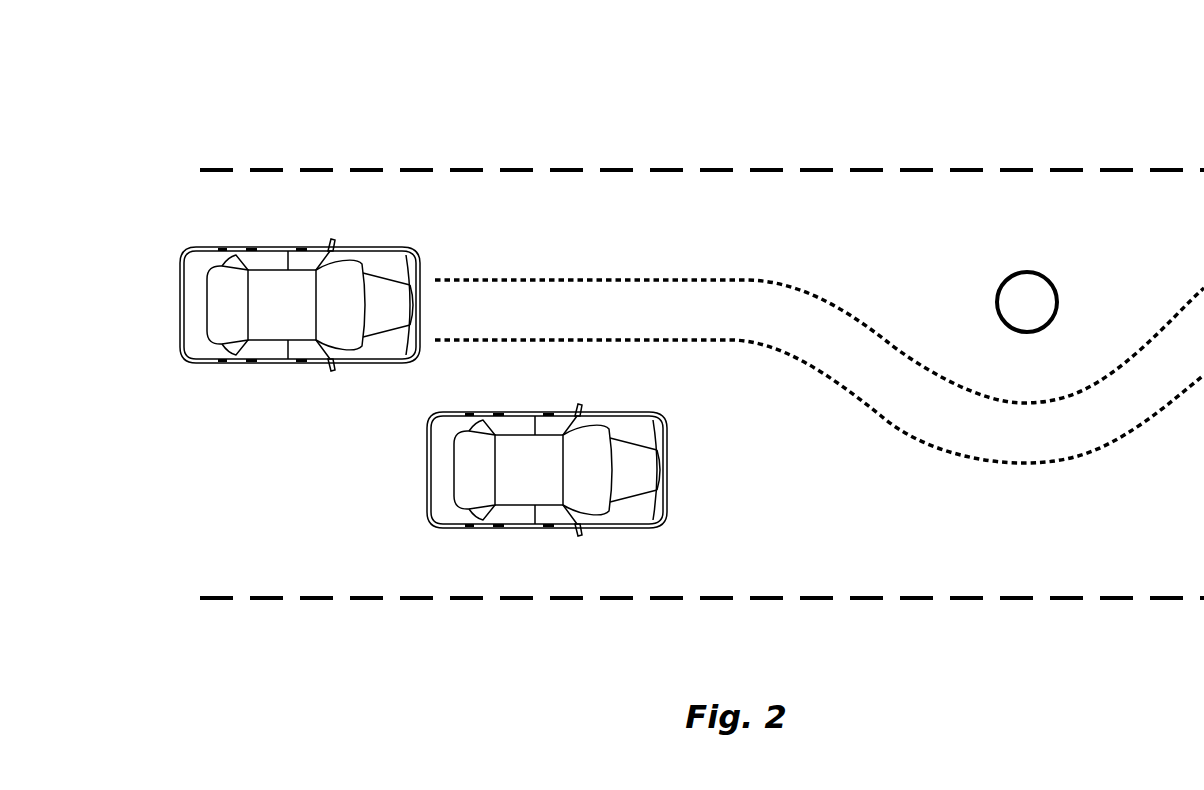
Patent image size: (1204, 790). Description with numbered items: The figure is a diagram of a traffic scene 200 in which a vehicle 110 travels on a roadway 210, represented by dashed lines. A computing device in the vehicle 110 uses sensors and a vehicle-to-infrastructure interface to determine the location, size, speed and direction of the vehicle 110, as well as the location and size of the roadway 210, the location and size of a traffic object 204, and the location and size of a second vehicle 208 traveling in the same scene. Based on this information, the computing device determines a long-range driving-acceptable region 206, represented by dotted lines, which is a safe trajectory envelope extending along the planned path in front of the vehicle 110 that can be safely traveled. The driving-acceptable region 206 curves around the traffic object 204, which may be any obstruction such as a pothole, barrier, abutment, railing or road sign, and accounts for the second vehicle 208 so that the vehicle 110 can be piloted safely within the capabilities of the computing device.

The traffic scene 200 is at (718, 66).
The roadway 210 is at (661, 132).
The long-range driving-acceptable region 206 is at (862, 270).
The traffic object 204 is at (1058, 294).
The vehicle 110 is at (307, 365).
The second vehicle 208 is at (425, 473).